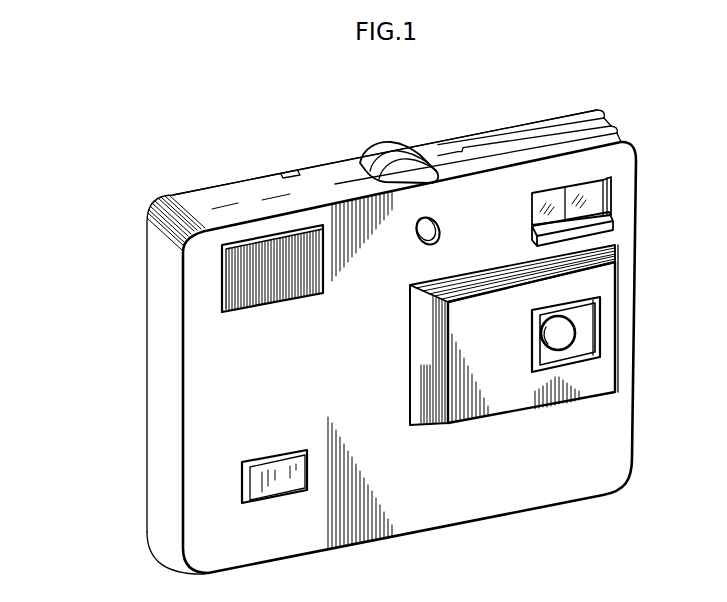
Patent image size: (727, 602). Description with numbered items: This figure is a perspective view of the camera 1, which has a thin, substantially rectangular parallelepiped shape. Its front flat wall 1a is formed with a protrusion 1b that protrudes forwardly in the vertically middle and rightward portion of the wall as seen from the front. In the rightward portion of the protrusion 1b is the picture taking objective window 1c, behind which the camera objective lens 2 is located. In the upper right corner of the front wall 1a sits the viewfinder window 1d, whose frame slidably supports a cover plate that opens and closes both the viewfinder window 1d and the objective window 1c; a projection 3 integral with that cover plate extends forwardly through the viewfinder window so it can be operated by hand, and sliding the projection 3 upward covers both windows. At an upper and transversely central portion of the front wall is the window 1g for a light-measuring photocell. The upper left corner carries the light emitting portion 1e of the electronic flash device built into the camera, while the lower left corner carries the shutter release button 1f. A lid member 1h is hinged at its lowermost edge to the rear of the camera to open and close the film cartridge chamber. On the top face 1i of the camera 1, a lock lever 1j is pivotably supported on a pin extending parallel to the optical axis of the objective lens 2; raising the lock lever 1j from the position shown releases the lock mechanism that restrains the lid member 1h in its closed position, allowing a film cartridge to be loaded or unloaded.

The camera 1 is at (129, 259).
The front flat wall 1a is at (422, 505).
The protrusion 1b is at (605, 390).
The picture taking objective window 1c is at (594, 342).
The viewfinder window 1d is at (611, 192).
The light emitting portion 1e is at (228, 242).
The shutter release button 1f is at (275, 485).
The window for photocell 1g is at (428, 247).
The lid member 1h is at (343, 160).
The top face 1i is at (244, 195).
The lock lever 1j is at (500, 148).
The camera objective lens 2 is at (575, 326).
The projection 3 is at (613, 229).